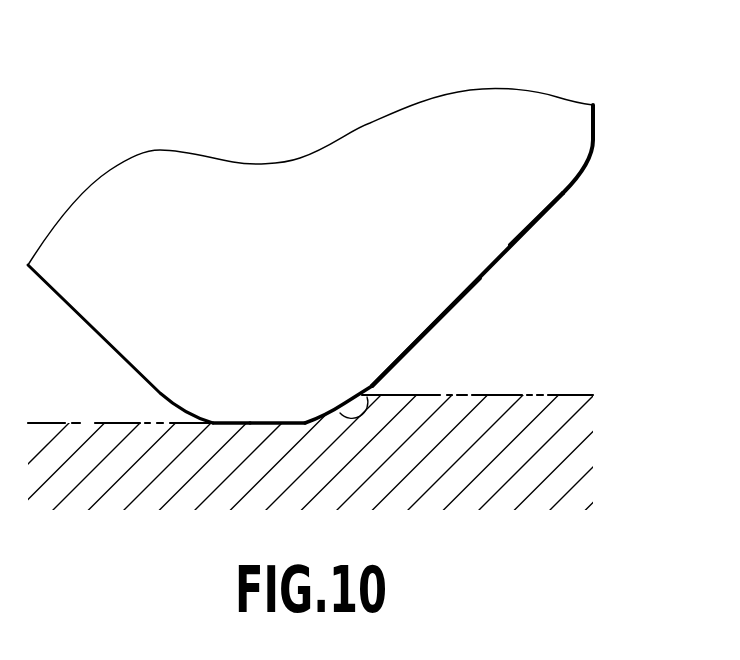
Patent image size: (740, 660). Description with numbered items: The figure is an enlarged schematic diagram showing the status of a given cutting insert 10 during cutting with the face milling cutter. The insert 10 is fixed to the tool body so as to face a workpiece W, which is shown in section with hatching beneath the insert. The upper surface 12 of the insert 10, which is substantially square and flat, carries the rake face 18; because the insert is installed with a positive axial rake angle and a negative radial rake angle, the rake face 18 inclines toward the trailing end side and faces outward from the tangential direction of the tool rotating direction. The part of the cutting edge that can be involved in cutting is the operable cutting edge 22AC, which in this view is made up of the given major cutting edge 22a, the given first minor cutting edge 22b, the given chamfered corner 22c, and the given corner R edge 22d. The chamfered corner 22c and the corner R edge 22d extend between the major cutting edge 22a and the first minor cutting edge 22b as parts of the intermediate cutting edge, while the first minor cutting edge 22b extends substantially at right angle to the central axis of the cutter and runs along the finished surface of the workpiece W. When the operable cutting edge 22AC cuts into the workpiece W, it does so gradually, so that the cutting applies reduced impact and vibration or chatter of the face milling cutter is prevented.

The insert 10 is at (475, 118).
The upper surface 12 is at (523, 210).
The rake face 18 is at (532, 170).
The operable cutting edge 22AC is at (507, 255).
The major cutting edge 22a is at (407, 353).
The first minor cutting edge 22b is at (233, 420).
The chamfered corner 22c is at (370, 397).
The corner R edge 22d is at (320, 420).
The workpiece W is at (575, 462).